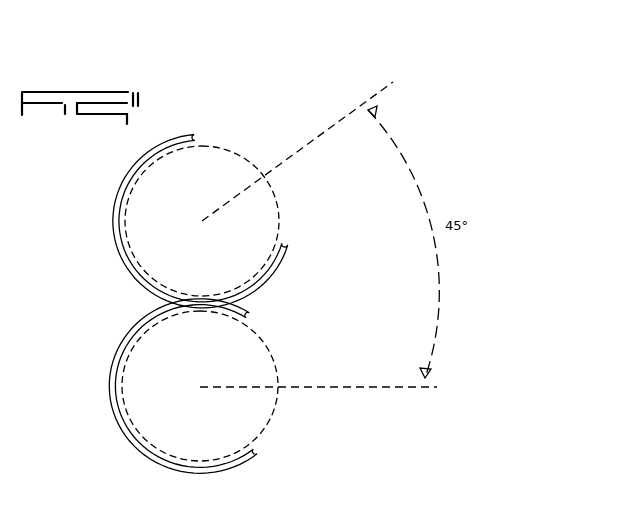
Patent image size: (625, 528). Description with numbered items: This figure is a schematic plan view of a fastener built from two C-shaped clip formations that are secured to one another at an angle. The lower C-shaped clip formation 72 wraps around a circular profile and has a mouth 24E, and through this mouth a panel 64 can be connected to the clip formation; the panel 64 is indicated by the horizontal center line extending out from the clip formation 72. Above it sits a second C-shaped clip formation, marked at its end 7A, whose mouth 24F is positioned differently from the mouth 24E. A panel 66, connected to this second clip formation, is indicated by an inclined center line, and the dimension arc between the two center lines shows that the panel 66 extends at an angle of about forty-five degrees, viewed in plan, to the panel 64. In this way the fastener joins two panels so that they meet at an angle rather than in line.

The mouth 24F is at (206, 143).
The mouth 24E is at (271, 346).
The panel 66 is at (330, 122).
The panel 64 is at (330, 392).
The upper clip end 7A is at (285, 254).
The C-shaped clip formation 72 is at (127, 345).